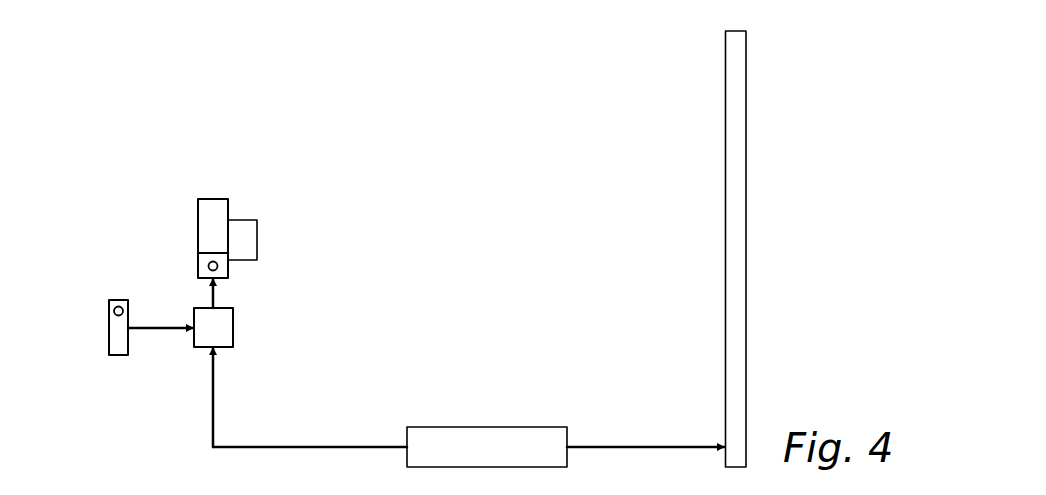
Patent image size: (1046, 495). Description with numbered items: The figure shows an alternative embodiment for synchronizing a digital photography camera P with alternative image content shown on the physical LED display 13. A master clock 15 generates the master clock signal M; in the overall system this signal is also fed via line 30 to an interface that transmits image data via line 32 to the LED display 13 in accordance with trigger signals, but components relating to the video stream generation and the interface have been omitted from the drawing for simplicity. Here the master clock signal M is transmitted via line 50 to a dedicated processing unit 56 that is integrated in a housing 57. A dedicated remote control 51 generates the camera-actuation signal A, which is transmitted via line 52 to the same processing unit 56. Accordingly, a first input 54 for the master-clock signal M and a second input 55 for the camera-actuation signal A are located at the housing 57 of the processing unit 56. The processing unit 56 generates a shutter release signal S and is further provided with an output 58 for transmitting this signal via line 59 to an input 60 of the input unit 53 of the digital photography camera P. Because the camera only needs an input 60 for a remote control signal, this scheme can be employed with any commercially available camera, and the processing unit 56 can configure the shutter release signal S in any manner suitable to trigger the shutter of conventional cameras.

The LED display 13 is at (735, 222).
The master clock 15 is at (505, 443).
The line 30 is at (652, 447).
The line 32 is at (652, 443).
The line 50 is at (297, 447).
The remote control 51 is at (117, 333).
The line 52 is at (155, 333).
The input unit 53 is at (203, 269).
The first input 54 is at (217, 350).
The second input 55 is at (190, 335).
The processing unit 56 is at (223, 328).
The housing 57 is at (233, 340).
The output 58 is at (215, 307).
The line 59 is at (215, 297).
The input 60 is at (217, 282).
The digital photography camera P is at (212, 225).